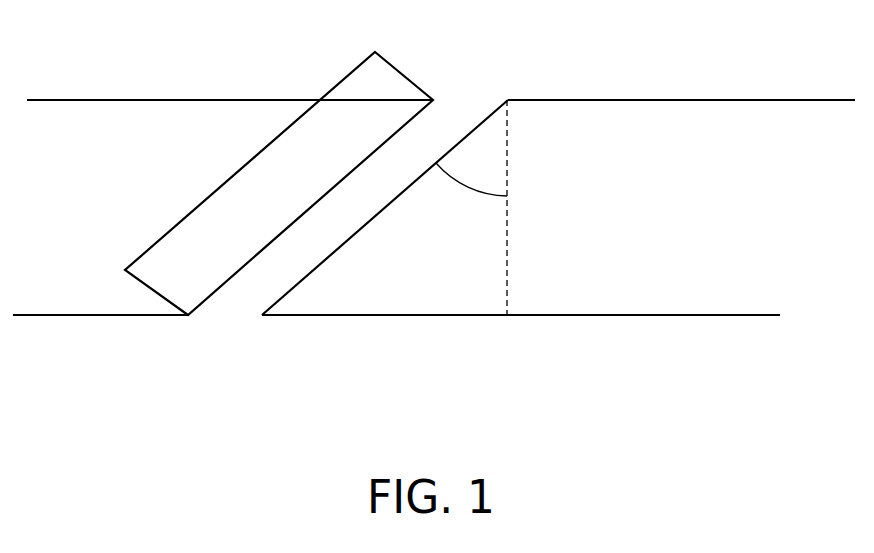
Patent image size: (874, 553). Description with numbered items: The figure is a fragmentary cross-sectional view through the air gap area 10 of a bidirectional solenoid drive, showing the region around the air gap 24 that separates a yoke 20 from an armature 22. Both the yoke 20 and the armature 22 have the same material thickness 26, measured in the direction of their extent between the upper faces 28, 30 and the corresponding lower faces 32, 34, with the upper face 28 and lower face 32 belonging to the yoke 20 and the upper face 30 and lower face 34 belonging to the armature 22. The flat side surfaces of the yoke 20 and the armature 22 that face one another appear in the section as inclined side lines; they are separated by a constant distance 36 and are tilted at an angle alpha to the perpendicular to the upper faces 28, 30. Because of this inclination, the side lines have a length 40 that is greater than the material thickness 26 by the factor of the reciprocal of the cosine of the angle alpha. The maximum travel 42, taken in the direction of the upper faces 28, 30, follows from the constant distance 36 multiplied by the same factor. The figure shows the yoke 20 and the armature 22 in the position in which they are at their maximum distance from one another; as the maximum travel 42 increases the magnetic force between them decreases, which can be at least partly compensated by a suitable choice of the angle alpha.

The air gap area 10 is at (752, 381).
The yoke 20 is at (175, 130).
The armature 22 is at (646, 119).
The air gap 24 is at (431, 135).
The material thickness 26 is at (706, 101).
The upper face of the yoke 28 is at (240, 98).
The upper face of the armature 30 is at (808, 98).
The lower face of the yoke 32 is at (75, 318).
The lower face of the armature 34 is at (470, 318).
The constant distance 36 is at (310, 158).
The length of the side lines 40 is at (387, 63).
The maximum travel 42 is at (284, 292).